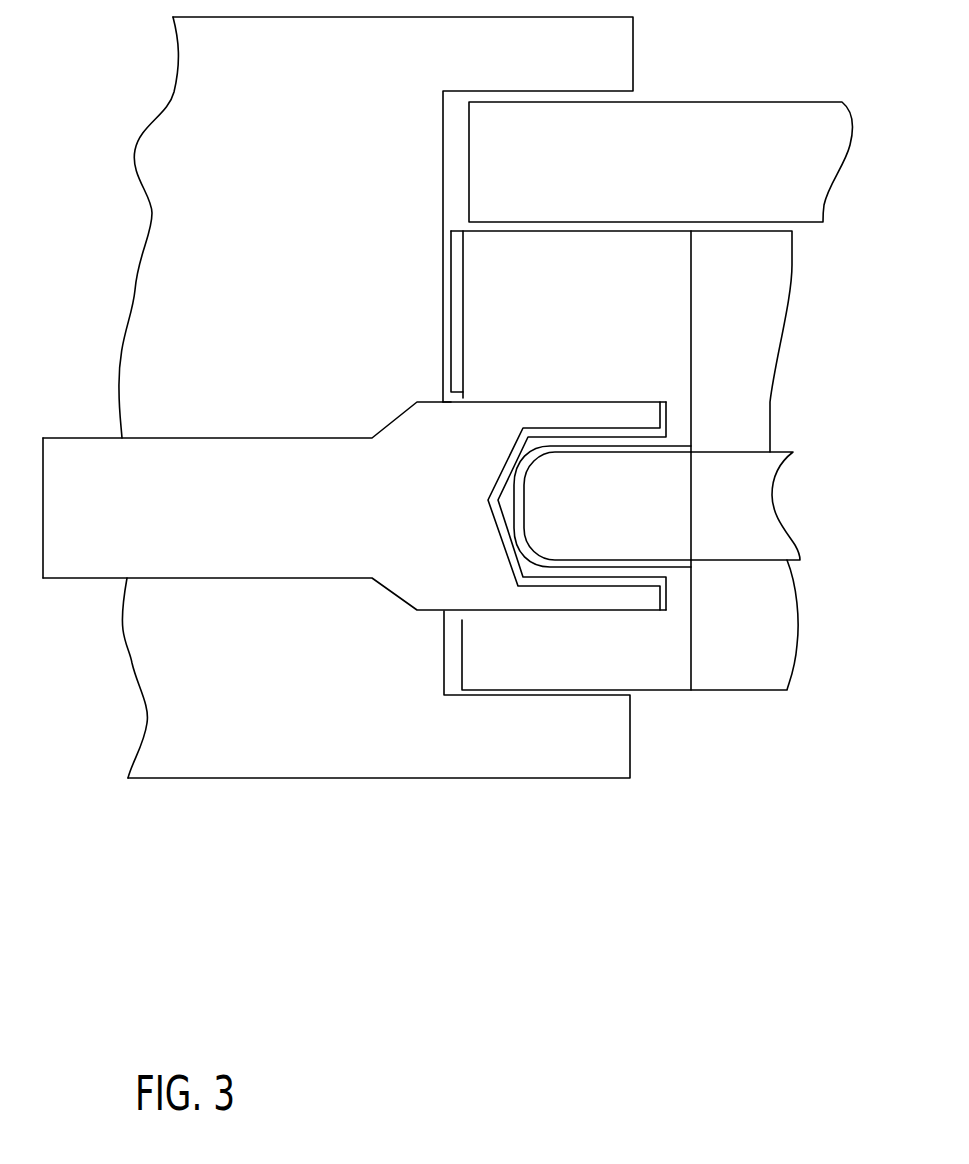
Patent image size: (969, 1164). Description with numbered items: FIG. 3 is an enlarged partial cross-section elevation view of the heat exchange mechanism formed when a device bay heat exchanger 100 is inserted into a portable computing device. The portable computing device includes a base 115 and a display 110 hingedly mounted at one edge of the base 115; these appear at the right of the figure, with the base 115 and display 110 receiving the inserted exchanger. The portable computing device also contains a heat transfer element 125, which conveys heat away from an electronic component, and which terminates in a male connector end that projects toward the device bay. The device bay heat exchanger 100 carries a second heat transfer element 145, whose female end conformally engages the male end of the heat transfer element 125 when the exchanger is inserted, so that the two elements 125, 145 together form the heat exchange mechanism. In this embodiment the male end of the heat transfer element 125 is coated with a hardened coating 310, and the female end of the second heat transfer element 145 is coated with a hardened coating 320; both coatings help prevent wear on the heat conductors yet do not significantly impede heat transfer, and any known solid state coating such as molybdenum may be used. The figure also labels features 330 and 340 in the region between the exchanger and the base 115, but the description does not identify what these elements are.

The device bay heat exchanger 100 is at (443, 787).
The display 110 is at (773, 94).
The base 115 is at (696, 705).
The heat transfer element 125 is at (788, 483).
The second heat transfer element 145 is at (242, 433).
The hardened coating 310 is at (530, 538).
The hardened coating 320 is at (497, 520).
The spring strip 330 is at (463, 303).
The gap 340 is at (462, 399).